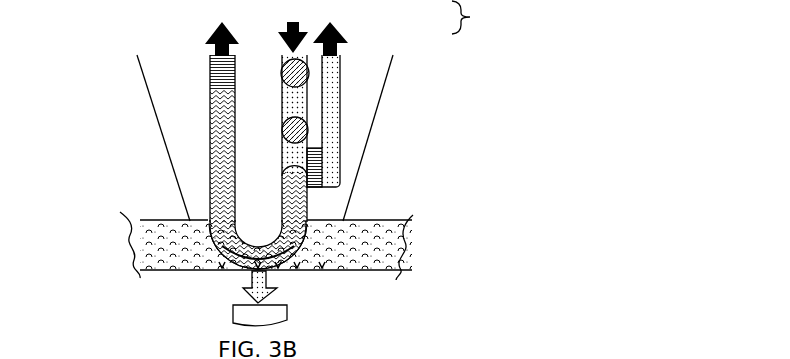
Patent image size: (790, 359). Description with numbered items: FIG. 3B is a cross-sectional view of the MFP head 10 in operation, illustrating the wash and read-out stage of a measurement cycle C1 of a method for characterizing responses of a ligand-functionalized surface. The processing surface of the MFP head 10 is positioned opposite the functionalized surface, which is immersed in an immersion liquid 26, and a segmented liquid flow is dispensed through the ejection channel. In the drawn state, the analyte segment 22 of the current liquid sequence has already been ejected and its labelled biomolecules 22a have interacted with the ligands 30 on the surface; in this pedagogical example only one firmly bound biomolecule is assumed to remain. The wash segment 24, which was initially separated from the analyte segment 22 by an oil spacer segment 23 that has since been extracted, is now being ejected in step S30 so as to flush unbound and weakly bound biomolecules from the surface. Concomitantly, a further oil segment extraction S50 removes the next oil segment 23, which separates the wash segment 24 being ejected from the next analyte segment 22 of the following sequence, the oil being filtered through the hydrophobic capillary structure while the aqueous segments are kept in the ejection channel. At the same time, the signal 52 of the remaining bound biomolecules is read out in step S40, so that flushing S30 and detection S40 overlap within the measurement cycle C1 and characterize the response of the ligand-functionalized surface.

The MFP head 10 is at (137, 120).
The immersion liquid 26 is at (209, 95).
The analyte segment 22 is at (284, 68).
The spacer segment 23 is at (279, 98).
The labelled biomolecule 22a is at (208, 172).
The wash segment 24 is at (310, 212).
The ligands 30 is at (212, 273).
The signal 52 is at (274, 285).
The wash segment ejection step S30 is at (296, 28).
The further oil segment extraction step S50 is at (346, 43).
The read-out step S40 is at (289, 316).
The measurement cycle C1 is at (479, 17).